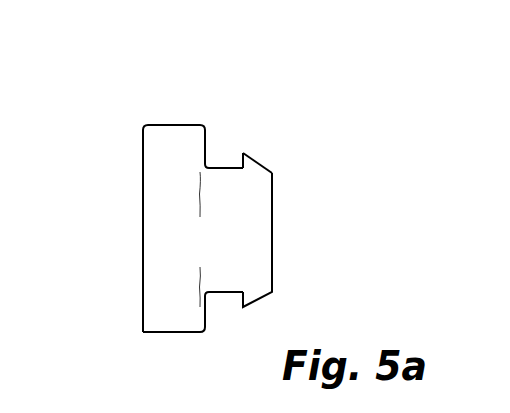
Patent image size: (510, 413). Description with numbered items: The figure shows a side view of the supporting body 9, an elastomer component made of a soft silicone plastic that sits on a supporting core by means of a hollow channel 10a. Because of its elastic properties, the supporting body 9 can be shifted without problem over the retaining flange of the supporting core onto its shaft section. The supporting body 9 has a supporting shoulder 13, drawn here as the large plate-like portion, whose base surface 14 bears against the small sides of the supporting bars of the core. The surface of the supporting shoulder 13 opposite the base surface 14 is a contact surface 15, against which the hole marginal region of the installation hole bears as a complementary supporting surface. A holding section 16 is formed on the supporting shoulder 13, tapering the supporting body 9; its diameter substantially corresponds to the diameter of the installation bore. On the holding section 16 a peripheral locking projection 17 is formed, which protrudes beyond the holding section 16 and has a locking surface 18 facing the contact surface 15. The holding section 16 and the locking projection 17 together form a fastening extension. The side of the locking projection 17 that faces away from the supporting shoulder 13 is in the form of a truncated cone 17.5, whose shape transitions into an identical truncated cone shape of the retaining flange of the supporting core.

The supporting body 9 is at (212, 210).
The hollow channel 10a is at (0, 353).
The supporting shoulder 13 is at (135, 217).
The base surface 14 is at (141, 210).
The contact surface 15 is at (211, 145).
The holding section 16 is at (228, 294).
The locking projection 17 is at (311, 198).
The truncated cone 17.5 is at (266, 167).
The locking surface 18 is at (240, 156).